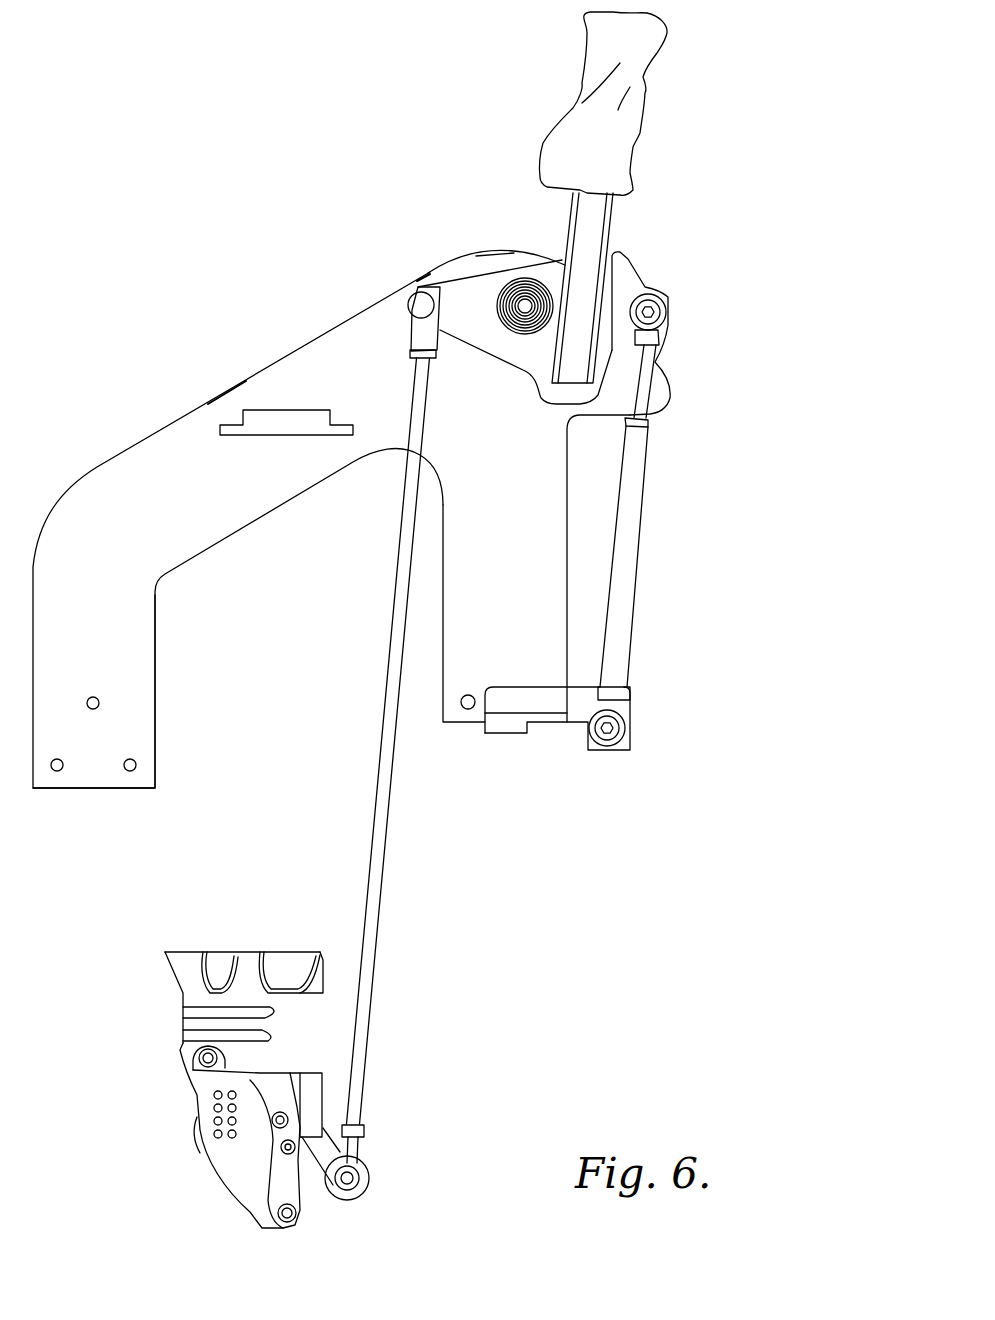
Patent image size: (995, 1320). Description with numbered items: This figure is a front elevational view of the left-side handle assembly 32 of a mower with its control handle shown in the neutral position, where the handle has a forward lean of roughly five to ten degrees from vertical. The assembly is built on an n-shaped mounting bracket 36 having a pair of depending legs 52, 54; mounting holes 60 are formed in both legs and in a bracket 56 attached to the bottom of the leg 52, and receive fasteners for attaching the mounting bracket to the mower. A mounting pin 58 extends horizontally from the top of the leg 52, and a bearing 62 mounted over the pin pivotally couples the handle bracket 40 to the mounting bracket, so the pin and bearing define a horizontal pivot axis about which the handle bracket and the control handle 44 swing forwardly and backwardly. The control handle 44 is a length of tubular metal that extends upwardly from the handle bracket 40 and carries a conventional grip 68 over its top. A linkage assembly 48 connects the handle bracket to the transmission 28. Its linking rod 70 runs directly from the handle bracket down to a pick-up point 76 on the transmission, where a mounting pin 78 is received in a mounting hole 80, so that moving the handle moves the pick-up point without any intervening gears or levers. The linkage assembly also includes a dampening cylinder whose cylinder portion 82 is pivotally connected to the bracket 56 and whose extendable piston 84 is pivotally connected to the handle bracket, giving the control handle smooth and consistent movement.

The transmission 28 is at (196, 933).
The handle assembly 32 is at (266, 248).
The mounting bracket 36 is at (262, 374).
The handle bracket 40 is at (478, 278).
The control handle 44 is at (600, 213).
The linkage assembly 48 is at (716, 449).
The leg 52 is at (457, 578).
The leg 54 is at (125, 691).
The bracket 56 is at (513, 727).
The mounting pin 58 is at (527, 313).
The mounting holes 60 is at (64, 762).
The bearing 62 is at (525, 280).
The grip 68 is at (590, 70).
The linking rod 70 is at (388, 829).
The pick-up point 76 is at (348, 1200).
The mounting pin 78 is at (362, 1178).
The mounting hole 80 is at (349, 1166).
The cylinder portion 82 is at (634, 516).
The piston 84 is at (643, 385).